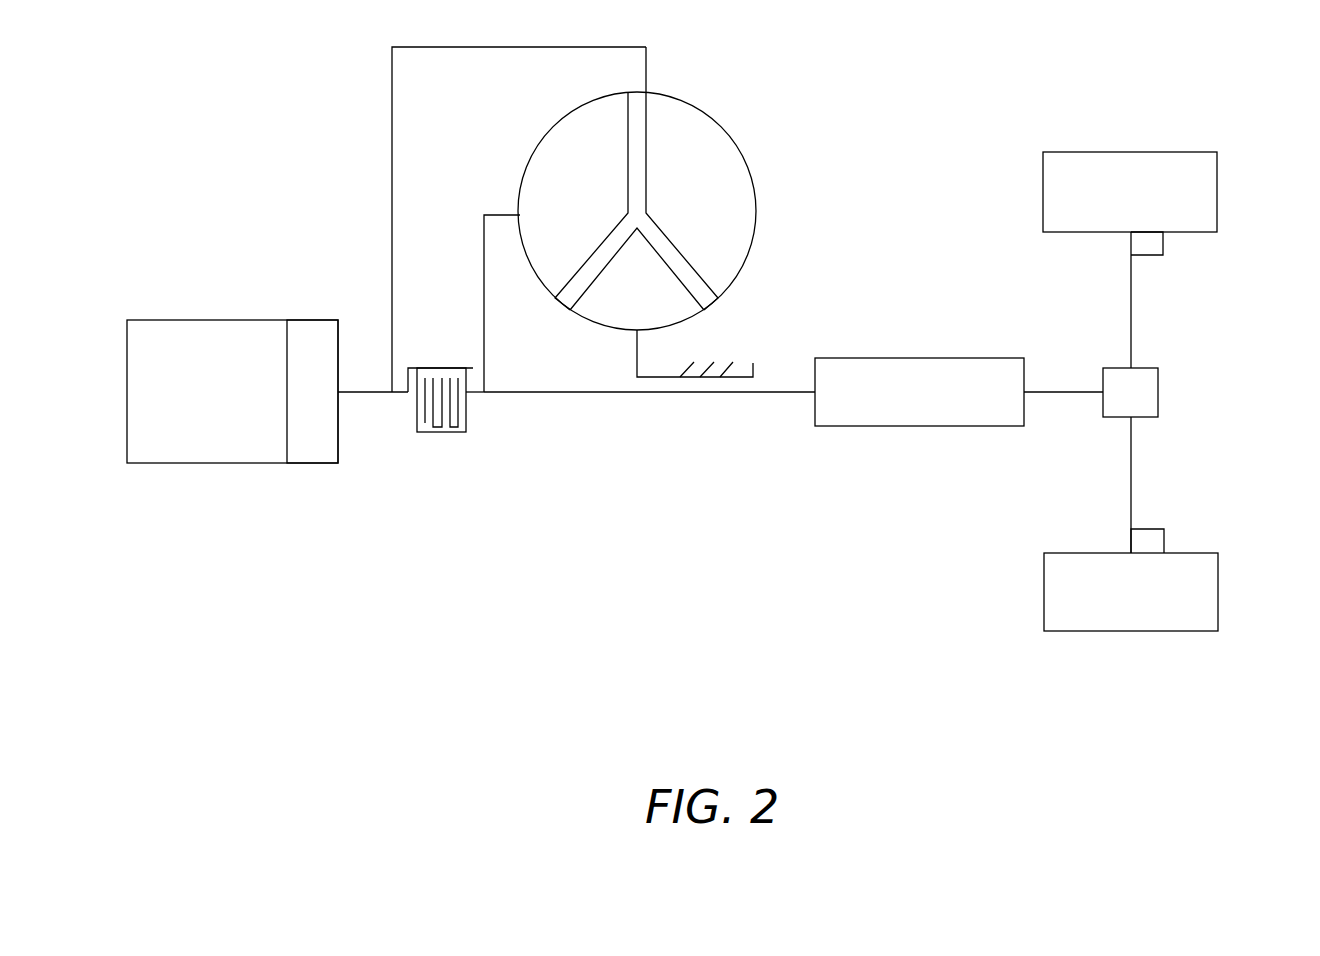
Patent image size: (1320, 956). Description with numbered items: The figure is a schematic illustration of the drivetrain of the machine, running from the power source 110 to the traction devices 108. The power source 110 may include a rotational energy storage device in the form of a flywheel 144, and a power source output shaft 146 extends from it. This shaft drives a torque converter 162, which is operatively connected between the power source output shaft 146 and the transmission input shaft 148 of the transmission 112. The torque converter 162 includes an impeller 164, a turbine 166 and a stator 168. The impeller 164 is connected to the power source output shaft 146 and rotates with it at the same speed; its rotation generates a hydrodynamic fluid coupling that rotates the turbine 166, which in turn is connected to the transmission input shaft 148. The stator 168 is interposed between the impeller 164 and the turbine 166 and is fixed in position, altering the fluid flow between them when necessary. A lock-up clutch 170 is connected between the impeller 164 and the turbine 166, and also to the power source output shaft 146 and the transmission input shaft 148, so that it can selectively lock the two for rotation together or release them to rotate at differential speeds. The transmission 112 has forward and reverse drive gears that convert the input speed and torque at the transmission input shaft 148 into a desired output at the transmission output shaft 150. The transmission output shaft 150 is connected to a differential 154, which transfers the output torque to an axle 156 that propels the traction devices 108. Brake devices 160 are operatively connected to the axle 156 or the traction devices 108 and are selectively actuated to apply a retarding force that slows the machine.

The traction devices 108 is at (1137, 152).
The power source 110 is at (217, 320).
The transmission 112 is at (895, 358).
The flywheel 144 is at (312, 320).
The power source output shaft 146 is at (367, 393).
The transmission input shaft 148 is at (783, 393).
The transmission output shaft 150 is at (1077, 390).
The differential 154 is at (1158, 388).
The axle 156 is at (1130, 477).
The brake devices 160 is at (1165, 250).
The torque converter 162 is at (692, 104).
The impeller 164 is at (708, 155).
The turbine 166 is at (567, 155).
The stator 168 is at (675, 308).
The lock-up clutch 170 is at (443, 368).